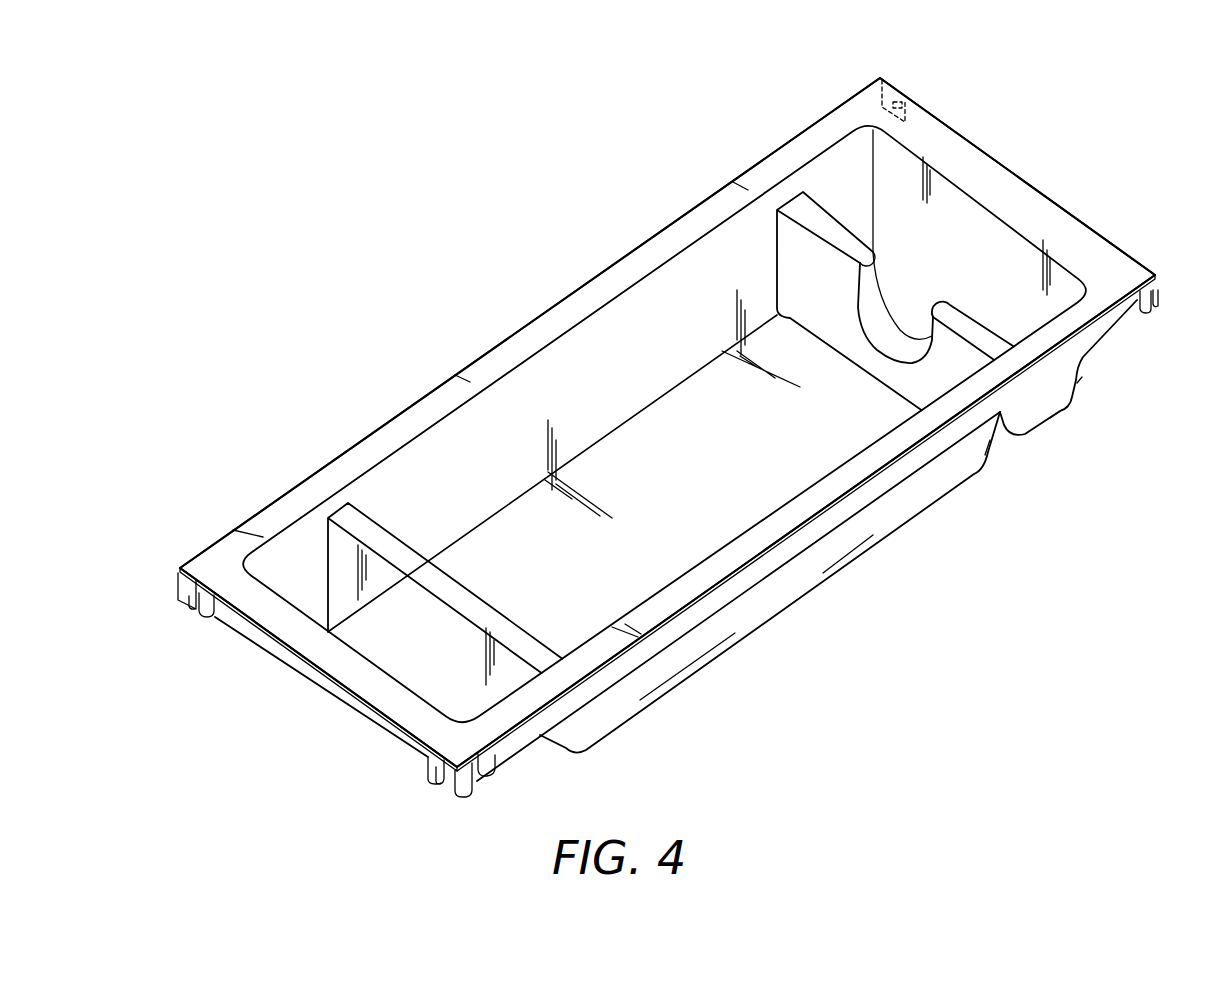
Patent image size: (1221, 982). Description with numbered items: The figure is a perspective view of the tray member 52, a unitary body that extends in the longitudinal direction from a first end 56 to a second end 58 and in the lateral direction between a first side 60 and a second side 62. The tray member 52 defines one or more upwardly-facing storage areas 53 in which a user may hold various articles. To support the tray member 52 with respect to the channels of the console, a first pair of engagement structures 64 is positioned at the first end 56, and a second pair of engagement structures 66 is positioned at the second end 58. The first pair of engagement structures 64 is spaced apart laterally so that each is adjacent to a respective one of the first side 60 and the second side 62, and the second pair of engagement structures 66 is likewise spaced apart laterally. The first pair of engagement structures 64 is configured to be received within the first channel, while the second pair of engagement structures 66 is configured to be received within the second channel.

The tray member 52 is at (418, 343).
The storage areas 53 is at (730, 484).
The first end 56 is at (313, 680).
The second end 58 is at (1016, 176).
The first side 60 is at (757, 573).
The second side 62 is at (610, 266).
The first pair of engagement structures 64 is at (180, 580).
The second pair of engagement structures 66 is at (882, 103).